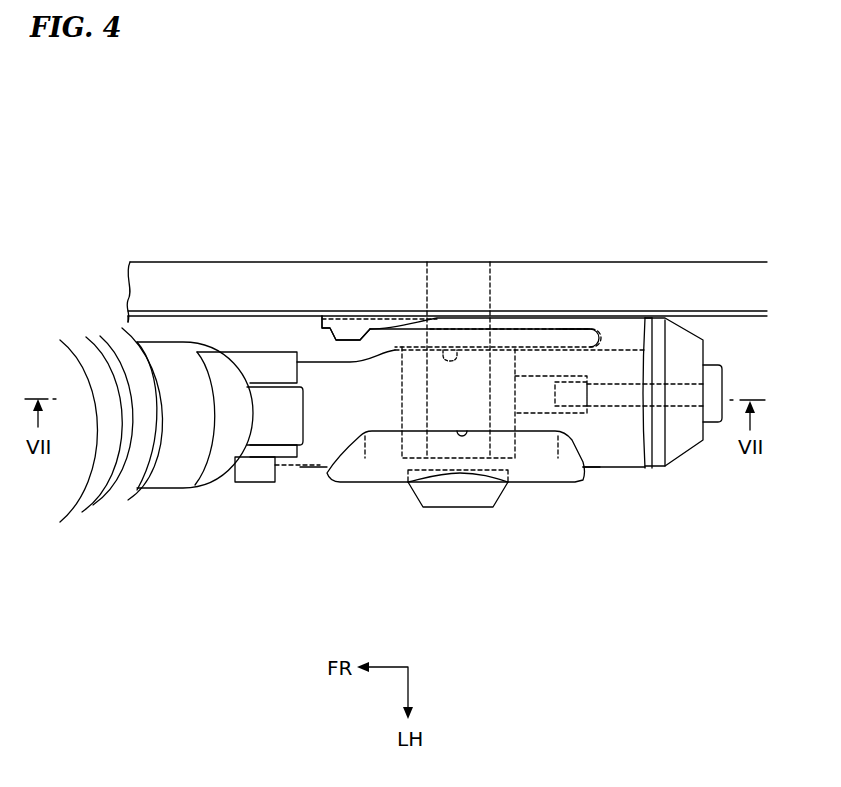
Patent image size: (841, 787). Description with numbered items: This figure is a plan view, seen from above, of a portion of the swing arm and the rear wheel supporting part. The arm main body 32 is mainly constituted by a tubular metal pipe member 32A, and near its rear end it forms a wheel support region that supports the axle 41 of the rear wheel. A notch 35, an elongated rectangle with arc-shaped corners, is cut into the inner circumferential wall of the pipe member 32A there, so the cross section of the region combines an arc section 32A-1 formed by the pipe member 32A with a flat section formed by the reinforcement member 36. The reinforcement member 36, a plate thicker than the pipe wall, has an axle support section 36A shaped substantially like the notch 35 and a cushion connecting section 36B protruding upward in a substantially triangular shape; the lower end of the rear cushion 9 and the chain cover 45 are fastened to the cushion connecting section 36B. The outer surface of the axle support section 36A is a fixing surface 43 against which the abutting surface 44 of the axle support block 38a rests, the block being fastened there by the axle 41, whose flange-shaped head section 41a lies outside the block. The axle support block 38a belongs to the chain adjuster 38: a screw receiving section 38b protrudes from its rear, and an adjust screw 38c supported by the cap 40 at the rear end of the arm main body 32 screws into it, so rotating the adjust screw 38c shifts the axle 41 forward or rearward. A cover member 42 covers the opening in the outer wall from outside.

The rear cushion 9 is at (97, 483).
The arm main body 32 is at (632, 478).
The pipe member 32A is at (317, 458).
The arc section 32A-1 is at (608, 447).
The notch 35 is at (603, 333).
The reinforcement member 36 is at (277, 302).
The axle support section 36A is at (525, 322).
The cushion connecting section 36B is at (210, 318).
The chain adjuster 38 is at (604, 368).
The axle support block 38a is at (398, 447).
The screw receiving section 38b is at (545, 340).
The adjust screw 38c is at (628, 383).
The cap 40 is at (681, 443).
The axle 41 is at (423, 287).
The head section 41a is at (458, 498).
The cover member 42 is at (533, 476).
The fixing surface 43 is at (445, 350).
The abutting surface 44 is at (457, 350).
The chain cover 45 is at (328, 277).